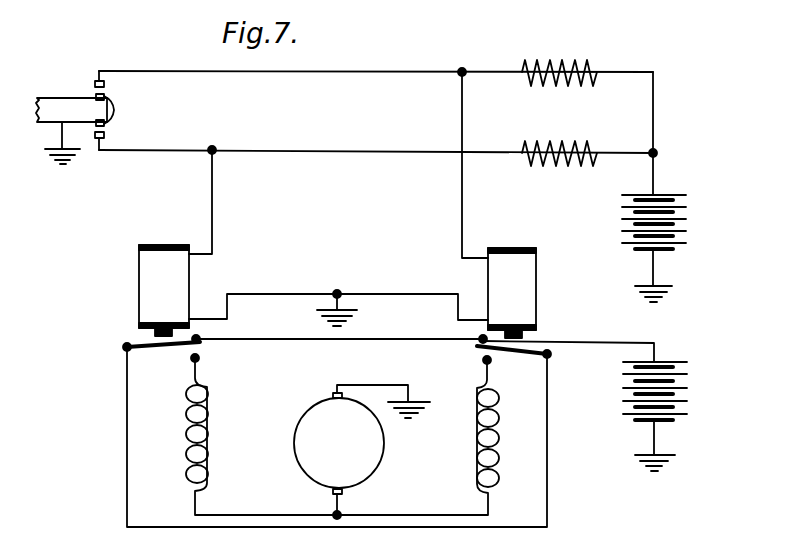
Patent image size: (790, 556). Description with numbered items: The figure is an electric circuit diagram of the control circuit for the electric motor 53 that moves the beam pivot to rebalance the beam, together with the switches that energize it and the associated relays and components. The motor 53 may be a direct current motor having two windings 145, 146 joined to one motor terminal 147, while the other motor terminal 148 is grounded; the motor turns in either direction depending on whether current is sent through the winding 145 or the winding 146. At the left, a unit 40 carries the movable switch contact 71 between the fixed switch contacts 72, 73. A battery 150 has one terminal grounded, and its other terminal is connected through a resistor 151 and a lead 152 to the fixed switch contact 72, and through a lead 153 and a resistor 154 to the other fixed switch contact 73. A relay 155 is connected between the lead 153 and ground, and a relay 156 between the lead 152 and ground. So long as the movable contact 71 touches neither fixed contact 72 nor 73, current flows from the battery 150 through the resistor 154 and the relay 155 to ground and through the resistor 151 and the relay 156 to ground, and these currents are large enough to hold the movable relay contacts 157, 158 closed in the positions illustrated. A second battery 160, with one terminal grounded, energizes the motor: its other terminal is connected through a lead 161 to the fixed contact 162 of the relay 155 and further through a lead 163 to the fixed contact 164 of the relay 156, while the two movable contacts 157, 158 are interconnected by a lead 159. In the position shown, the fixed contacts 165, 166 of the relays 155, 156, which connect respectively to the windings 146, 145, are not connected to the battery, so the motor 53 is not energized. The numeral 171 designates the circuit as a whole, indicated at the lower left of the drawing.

The control switch unit 40 is at (76, 85).
The movable switch contact 71 is at (114, 110).
The fixed switch contact 72 is at (105, 135).
The fixed switch contact 73 is at (105, 84).
The lead 153 is at (354, 70).
The lead 152 is at (348, 150).
The resistor 154 is at (552, 65).
The resistor 151 is at (552, 145).
The battery 150 is at (685, 232).
The relay 156 is at (139, 275).
The relay 155 is at (536, 274).
The fixed contact 164 is at (198, 339).
The fixed contact 162 is at (483, 339).
The lead 161 is at (595, 342).
The lead 163 is at (276, 340).
The movable contact 158 is at (152, 348).
The movable contact 157 is at (506, 349).
The fixed contact 166 is at (196, 360).
The fixed contact 165 is at (486, 361).
The lead 159 is at (547, 441).
The winding 145 is at (212, 425).
The winding 146 is at (474, 445).
The electric motor 53 is at (294, 433).
The motor terminal 148 is at (333, 394).
The motor terminal 147 is at (344, 503).
The battery 160 is at (685, 415).
The control circuit 171 is at (103, 551).